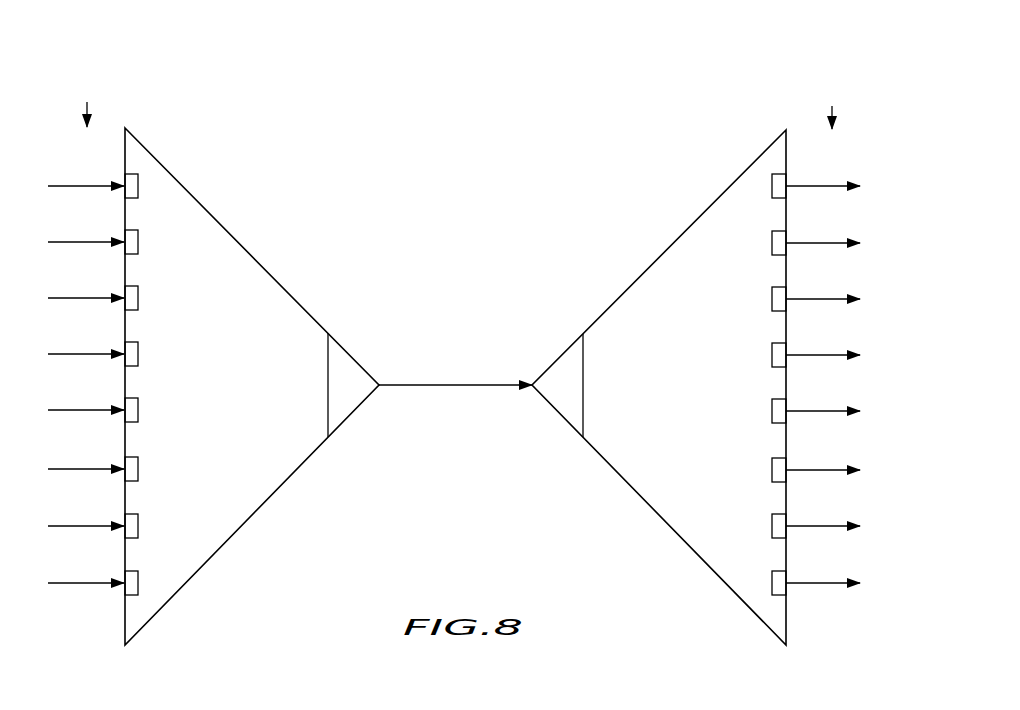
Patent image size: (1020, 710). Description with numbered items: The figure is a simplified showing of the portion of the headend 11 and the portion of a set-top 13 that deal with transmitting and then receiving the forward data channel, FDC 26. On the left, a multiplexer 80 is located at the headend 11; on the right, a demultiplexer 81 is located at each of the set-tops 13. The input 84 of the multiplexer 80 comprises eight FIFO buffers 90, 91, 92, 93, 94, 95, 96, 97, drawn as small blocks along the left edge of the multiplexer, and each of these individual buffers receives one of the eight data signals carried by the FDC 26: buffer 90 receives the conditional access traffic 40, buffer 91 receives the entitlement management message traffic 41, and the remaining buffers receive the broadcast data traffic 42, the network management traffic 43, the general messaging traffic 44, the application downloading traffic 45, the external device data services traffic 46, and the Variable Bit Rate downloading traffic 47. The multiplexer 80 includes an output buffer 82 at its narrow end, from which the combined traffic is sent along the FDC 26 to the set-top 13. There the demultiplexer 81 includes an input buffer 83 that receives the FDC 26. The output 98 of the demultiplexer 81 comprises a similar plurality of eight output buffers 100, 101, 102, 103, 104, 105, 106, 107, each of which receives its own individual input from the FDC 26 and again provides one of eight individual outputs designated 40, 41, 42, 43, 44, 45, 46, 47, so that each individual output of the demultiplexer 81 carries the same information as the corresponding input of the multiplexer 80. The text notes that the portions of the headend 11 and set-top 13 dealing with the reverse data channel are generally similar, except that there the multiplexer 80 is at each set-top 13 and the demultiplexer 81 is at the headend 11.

The headend 11 is at (266, 185).
The set-top 13 is at (711, 176).
The FDC 26 is at (490, 388).
The conditional access traffic 40 is at (98, 185).
The entitlement management message traffic 41 is at (98, 241).
The broadcast data traffic 42 is at (98, 297).
The network management traffic 43 is at (98, 353).
The general messaging traffic 44 is at (98, 409).
The application downloading traffic 45 is at (98, 468).
The external device data services traffic 46 is at (98, 525).
The Variable Bit Rate downloading traffic 47 is at (98, 582).
The multiplexer 80 is at (286, 282).
The demultiplexer 81 is at (635, 270).
The output buffer 82 is at (346, 373).
The input buffer 83 is at (564, 369).
The input 84 is at (83, 88).
The FIFO buffer 90 is at (138, 186).
The FIFO buffer 91 is at (138, 242).
The FIFO buffer 92 is at (138, 298).
The FIFO buffer 93 is at (138, 354).
The FIFO buffer 94 is at (138, 410).
The FIFO buffer 95 is at (138, 469).
The FIFO buffer 96 is at (138, 526).
The FIFO buffer 97 is at (138, 583).
The output 98 is at (818, 91).
The output buffer 100 is at (772, 186).
The output buffer 101 is at (772, 243).
The output buffer 102 is at (772, 299).
The output buffer 103 is at (772, 355).
The output buffer 104 is at (772, 411).
The output buffer 105 is at (772, 470).
The output buffer 106 is at (772, 526).
The output buffer 107 is at (772, 583).